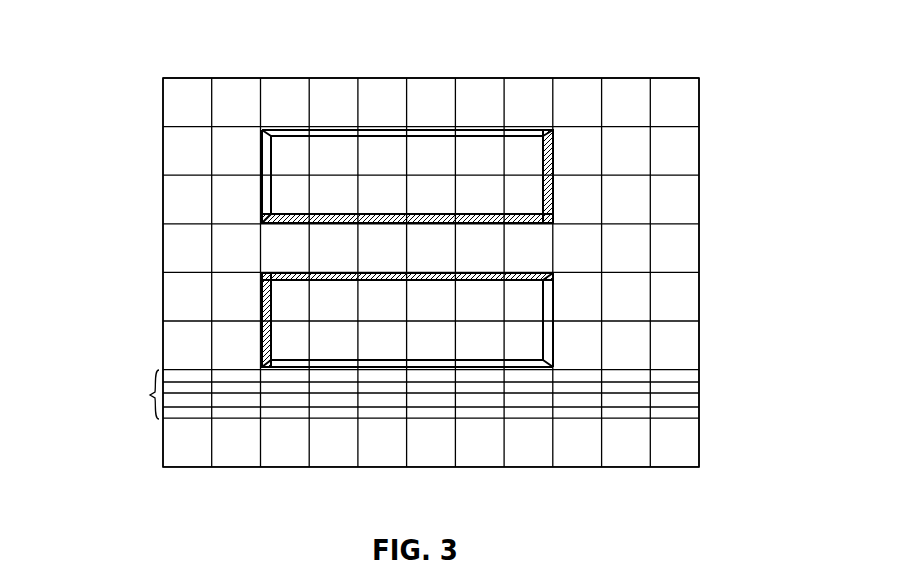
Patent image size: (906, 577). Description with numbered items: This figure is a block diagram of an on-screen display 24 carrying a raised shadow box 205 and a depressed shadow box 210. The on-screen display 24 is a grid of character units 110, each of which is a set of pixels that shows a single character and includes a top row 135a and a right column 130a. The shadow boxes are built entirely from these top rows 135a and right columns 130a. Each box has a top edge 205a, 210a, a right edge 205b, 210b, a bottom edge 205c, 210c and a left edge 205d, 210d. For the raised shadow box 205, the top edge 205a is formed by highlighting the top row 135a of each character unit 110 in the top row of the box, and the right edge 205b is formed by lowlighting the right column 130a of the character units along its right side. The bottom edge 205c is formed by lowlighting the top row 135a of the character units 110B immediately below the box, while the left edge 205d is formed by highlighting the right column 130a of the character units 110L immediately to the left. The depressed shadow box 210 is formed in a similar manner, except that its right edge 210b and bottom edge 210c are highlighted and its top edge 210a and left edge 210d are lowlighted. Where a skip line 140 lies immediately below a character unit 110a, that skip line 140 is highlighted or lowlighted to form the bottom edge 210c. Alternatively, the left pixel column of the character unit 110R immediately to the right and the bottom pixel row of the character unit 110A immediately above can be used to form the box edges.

The on-screen display 24 is at (699, 102).
The character unit 110 is at (436, 270).
The character unit immediately above 110A is at (299, 95).
The character unit immediately below 110B is at (262, 237).
The character unit immediately to the left 110L is at (247, 163).
The character unit immediately to the right 110R is at (580, 150).
The character unit above a skip line 110a is at (395, 372).
The right column 130a is at (560, 133).
The top row 135a is at (264, 130).
The skip line 140 is at (406, 394).
The raised shadow box 205 is at (330, 150).
The top edge of raised shadow box 205a is at (378, 130).
The right edge of raised shadow box 205b is at (541, 132).
The bottom edge of raised shadow box 205c is at (388, 226).
The left edge of raised shadow box 205d is at (262, 146).
The depressed shadow box 210 is at (432, 369).
The top edge of depressed shadow box 210a is at (427, 272).
The right edge of depressed shadow box 210b is at (534, 272).
The bottom edge of depressed shadow box 210c is at (300, 372).
The left edge of depressed shadow box 210d is at (262, 298).